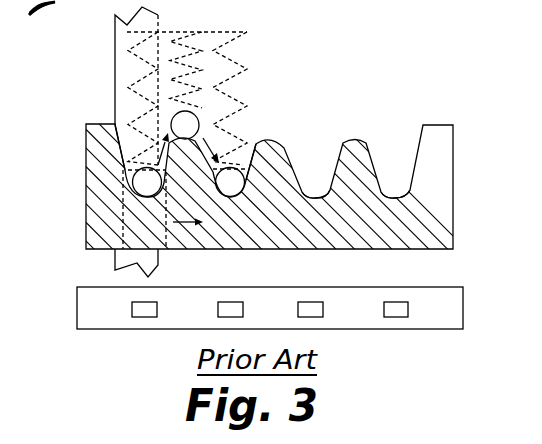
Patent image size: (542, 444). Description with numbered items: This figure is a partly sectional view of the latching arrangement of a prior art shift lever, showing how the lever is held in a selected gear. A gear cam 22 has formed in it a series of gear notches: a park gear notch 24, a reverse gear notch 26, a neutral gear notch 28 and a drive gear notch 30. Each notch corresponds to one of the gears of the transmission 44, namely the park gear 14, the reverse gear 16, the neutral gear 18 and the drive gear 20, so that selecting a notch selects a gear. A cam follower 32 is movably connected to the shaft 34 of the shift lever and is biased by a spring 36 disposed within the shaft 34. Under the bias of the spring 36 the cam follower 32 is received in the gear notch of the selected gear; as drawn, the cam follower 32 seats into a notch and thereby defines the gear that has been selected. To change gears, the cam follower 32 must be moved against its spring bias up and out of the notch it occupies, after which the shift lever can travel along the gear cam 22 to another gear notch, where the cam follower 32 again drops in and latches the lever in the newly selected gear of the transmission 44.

The park gear 14 is at (153, 300).
The reverse gear 16 is at (233, 300).
The neutral gear 18 is at (313, 300).
The drive gear 20 is at (398, 300).
The gear cam 22 is at (301, 103).
The park gear notch 24 is at (116, 122).
The reverse gear notch 26 is at (248, 153).
The neutral gear notch 28 is at (313, 162).
The drive gear notch 30 is at (394, 157).
The cam follower 32 is at (133, 176).
The shaft 34 is at (115, 43).
The spring 36 is at (158, 15).
The transmission 44 is at (76, 293).